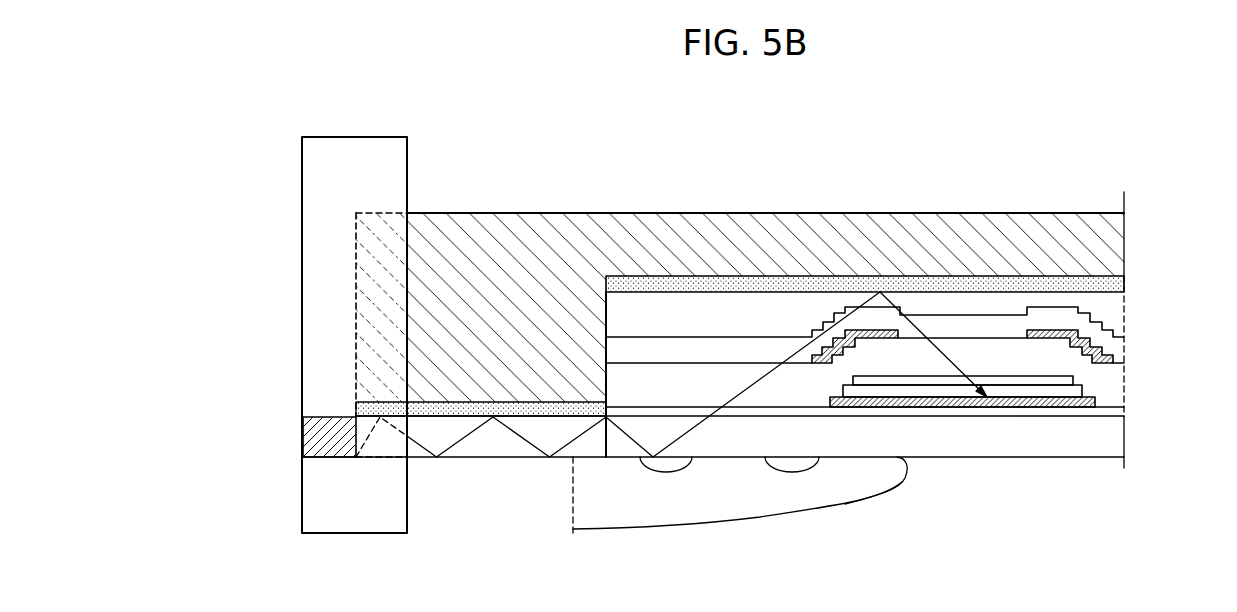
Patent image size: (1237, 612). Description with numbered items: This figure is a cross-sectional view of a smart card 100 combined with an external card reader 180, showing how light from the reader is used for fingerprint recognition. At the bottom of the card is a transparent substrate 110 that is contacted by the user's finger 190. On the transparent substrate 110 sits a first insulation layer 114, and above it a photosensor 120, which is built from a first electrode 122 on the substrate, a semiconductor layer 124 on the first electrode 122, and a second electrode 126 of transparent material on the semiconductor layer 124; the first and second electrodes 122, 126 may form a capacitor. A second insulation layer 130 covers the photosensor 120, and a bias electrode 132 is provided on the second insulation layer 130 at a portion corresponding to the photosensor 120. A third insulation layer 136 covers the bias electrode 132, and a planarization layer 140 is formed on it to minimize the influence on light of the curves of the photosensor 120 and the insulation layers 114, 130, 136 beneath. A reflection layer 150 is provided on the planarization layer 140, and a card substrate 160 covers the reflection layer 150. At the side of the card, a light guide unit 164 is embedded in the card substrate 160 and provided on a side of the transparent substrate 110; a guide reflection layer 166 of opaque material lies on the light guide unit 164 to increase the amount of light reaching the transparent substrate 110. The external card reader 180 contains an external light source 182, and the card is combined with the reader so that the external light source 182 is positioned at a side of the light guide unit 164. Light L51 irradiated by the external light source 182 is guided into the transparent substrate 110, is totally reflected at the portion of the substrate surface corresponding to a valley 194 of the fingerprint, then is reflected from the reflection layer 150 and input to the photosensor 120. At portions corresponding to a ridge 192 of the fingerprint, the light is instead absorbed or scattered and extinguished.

The smart card 100 is at (214, 111).
The transparent substrate 110 is at (1110, 440).
The first insulation layer 114 is at (1122, 410).
The photosensor 120 is at (962, 474).
The first electrode 122 is at (1070, 403).
The semiconductor layer 124 is at (1003, 390).
The second electrode 126 is at (946, 380).
The second insulation layer 130 is at (1107, 380).
The bias electrode 132 is at (1042, 330).
The third insulation layer 136 is at (1113, 345).
The planarization layer 140 is at (1112, 313).
The reflection layer 150 is at (1113, 283).
The card substrate 160 is at (1107, 246).
The light guide unit 164 is at (478, 443).
The guide reflection layer 166 is at (363, 410).
The external card reader 180 is at (325, 304).
The external light source 182 is at (318, 437).
The finger 190 is at (740, 525).
The ridge 192 is at (742, 459).
The valley 194 is at (667, 459).
The light L51 is at (688, 434).